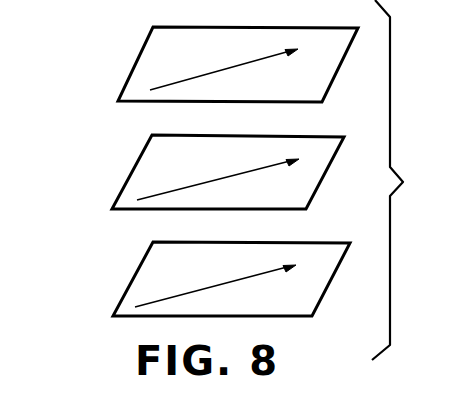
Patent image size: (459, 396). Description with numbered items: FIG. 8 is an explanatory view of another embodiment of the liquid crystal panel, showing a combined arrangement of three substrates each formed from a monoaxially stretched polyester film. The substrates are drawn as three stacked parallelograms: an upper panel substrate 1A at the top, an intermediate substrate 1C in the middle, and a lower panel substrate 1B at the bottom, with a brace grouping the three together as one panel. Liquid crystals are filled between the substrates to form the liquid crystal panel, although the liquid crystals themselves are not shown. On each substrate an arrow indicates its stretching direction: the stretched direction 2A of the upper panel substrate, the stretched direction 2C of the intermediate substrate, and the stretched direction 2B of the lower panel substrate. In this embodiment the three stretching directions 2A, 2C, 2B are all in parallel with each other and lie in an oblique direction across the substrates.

The upper panel substrate 1A is at (136, 61).
The stretched direction of upper panel substrate 2A is at (224, 69).
The intermediate substrate 1C is at (133, 169).
The stretched direction of intermediate panel substrate 2C is at (223, 178).
The lower panel substrate 1B is at (134, 276).
The stretched direction of lower panel substrate 2B is at (223, 285).